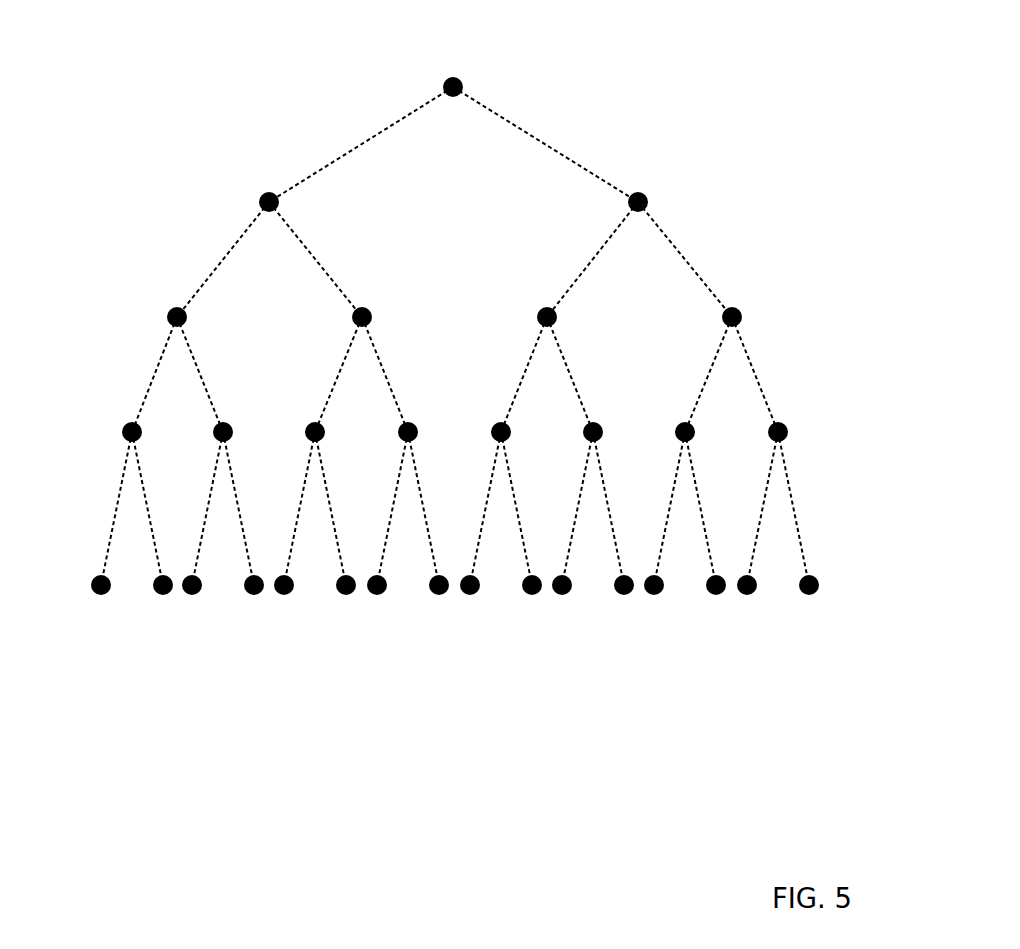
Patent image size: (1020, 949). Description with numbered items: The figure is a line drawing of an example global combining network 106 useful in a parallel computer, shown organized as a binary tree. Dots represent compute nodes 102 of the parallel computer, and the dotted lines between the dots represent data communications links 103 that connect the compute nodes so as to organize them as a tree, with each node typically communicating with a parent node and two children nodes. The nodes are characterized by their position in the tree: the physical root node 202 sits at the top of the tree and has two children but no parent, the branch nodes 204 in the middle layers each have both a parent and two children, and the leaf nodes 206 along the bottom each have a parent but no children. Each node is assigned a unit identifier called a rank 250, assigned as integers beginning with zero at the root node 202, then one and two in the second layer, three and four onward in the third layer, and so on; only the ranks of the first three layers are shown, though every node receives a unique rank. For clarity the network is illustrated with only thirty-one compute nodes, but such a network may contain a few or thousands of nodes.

The compute nodes 102 is at (531, 594).
The data communications links 103 is at (372, 140).
The global combining network 106 is at (298, 831).
The physical root node 202 is at (592, 59).
The branch nodes 204 is at (831, 150).
The leaf nodes 206 is at (831, 628).
The rank 250 is at (307, 212).